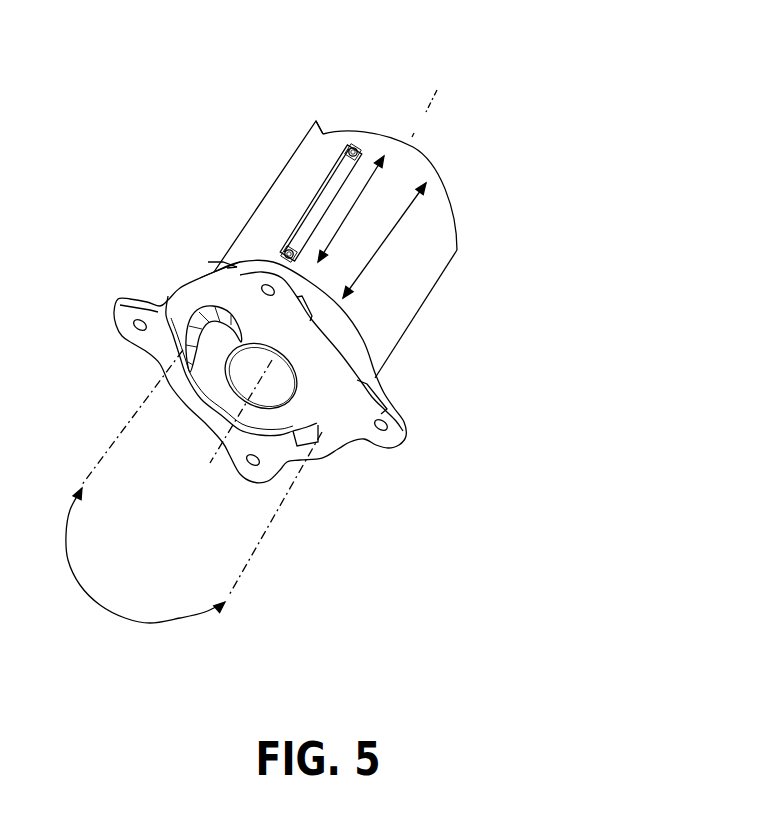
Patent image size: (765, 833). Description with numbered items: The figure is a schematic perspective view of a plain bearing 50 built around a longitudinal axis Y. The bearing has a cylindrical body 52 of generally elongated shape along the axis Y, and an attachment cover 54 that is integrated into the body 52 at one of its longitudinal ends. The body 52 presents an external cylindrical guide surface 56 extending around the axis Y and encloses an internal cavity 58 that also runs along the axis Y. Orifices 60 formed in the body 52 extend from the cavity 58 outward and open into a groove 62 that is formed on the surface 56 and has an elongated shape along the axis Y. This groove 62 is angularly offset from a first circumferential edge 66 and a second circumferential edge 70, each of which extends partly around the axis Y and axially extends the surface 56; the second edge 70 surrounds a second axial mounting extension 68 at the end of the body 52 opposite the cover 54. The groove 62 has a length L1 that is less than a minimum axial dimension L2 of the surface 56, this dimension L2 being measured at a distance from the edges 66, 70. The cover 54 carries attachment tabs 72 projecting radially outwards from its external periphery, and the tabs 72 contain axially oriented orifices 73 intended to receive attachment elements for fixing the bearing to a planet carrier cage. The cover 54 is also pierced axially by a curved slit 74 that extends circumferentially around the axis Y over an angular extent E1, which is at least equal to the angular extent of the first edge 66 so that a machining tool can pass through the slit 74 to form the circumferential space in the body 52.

The plain bearing 50 is at (520, 167).
The cylindrical body 52 is at (458, 270).
The attachment cover 54 is at (337, 466).
The external cylindrical guide surface 56 is at (287, 244).
The internal cavity 58 is at (242, 368).
The orifices 60 is at (353, 143).
The groove 62 is at (329, 170).
The first circumferential edge 66 is at (212, 265).
The second axial mounting extension 68 is at (425, 158).
The second circumferential edge 70 is at (312, 132).
The attachment tabs 72 is at (115, 310).
The axially oriented orifices 73 is at (140, 334).
The slit 74 is at (297, 436).
The length of the groove L1 is at (368, 190).
The minimum axial dimension of the surface L2 is at (371, 261).
The axis Y is at (412, 140).
The angular extent of the slit E1 is at (176, 620).